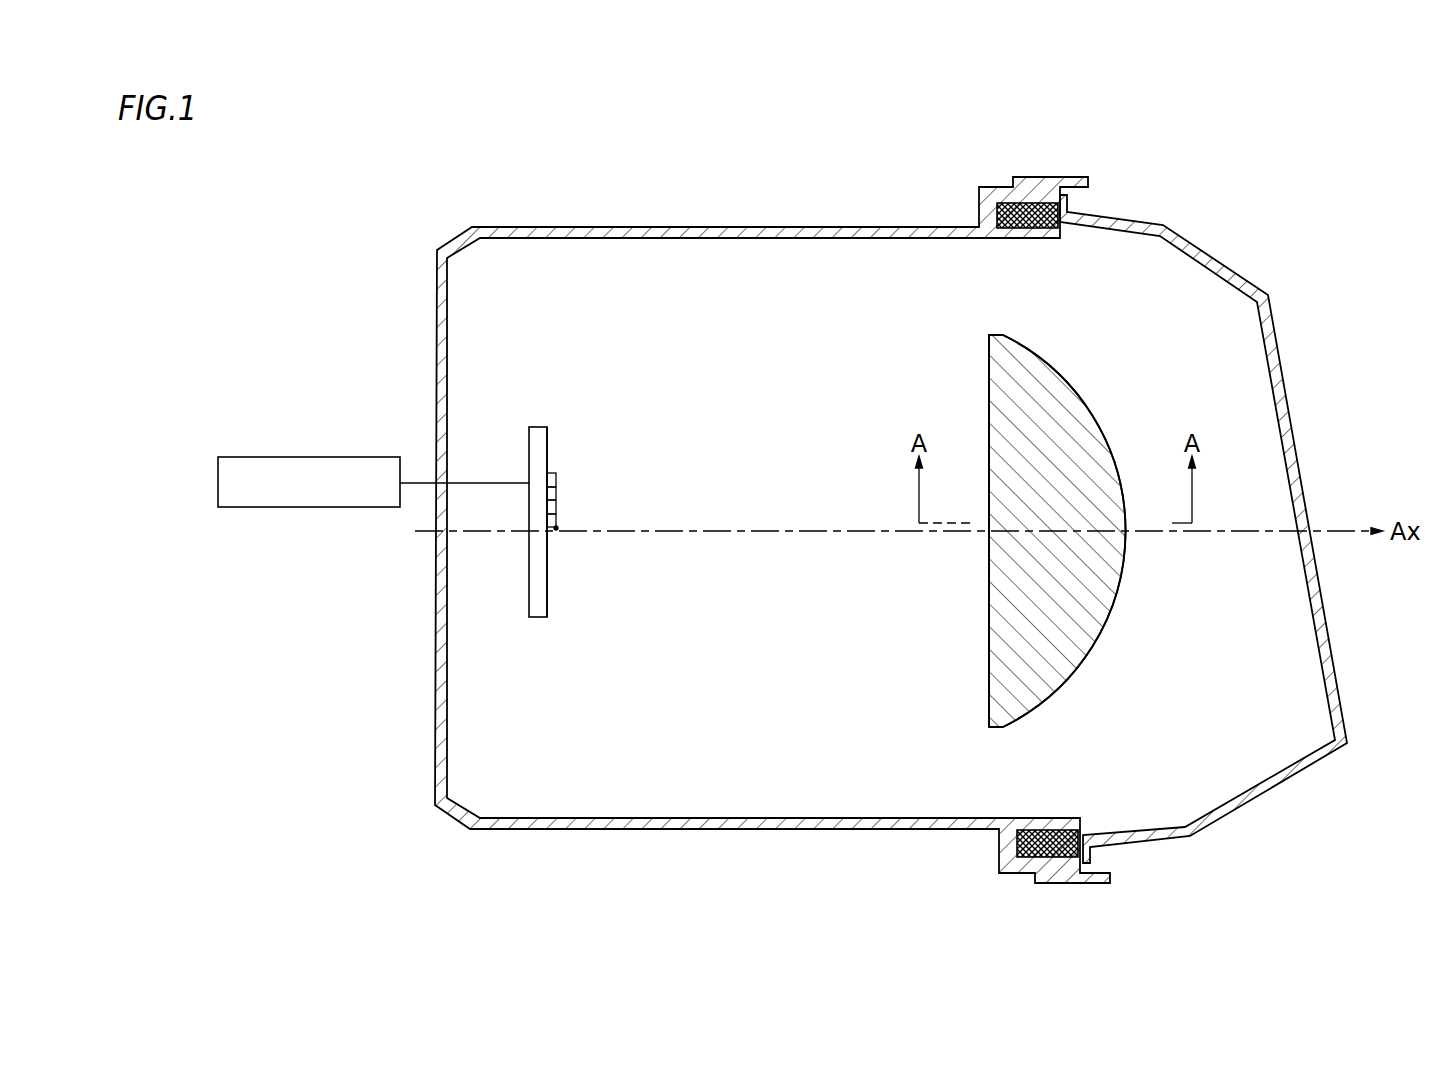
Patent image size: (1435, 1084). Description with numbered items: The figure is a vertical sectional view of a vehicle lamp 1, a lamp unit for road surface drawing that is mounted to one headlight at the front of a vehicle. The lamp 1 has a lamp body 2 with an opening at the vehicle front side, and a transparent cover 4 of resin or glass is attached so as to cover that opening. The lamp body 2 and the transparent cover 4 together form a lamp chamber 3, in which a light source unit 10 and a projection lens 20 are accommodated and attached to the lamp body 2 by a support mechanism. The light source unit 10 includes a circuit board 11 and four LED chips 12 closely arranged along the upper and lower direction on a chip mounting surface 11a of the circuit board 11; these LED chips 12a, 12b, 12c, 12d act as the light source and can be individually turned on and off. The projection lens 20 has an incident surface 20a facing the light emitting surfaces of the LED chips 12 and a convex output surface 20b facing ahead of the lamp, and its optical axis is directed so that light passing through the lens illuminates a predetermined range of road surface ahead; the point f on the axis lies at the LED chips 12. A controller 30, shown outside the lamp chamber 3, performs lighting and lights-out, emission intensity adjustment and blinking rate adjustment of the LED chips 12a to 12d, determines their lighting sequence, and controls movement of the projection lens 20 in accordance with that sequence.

The vehicle lamp 1 is at (806, 905).
The lamp body 2 is at (523, 830).
The lamp chamber 3 is at (1205, 536).
The transparent cover 4 is at (1243, 803).
The light source unit 10 is at (549, 398).
The circuit board 11 is at (547, 630).
The chip mounting surface 11a is at (548, 443).
The LED chips 12 is at (628, 468).
The LED chip 12a is at (556, 478).
The LED chip 12b is at (556, 491).
The LED chip 12c is at (556, 505).
The LED chip 12d is at (607, 512).
The focal point f is at (556, 528).
The projection lens 20 is at (1088, 377).
The incident surface 20a is at (988, 640).
The output surface 20b is at (1100, 673).
The controller 30 is at (317, 457).